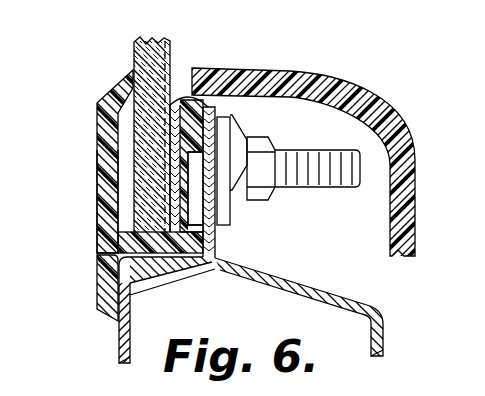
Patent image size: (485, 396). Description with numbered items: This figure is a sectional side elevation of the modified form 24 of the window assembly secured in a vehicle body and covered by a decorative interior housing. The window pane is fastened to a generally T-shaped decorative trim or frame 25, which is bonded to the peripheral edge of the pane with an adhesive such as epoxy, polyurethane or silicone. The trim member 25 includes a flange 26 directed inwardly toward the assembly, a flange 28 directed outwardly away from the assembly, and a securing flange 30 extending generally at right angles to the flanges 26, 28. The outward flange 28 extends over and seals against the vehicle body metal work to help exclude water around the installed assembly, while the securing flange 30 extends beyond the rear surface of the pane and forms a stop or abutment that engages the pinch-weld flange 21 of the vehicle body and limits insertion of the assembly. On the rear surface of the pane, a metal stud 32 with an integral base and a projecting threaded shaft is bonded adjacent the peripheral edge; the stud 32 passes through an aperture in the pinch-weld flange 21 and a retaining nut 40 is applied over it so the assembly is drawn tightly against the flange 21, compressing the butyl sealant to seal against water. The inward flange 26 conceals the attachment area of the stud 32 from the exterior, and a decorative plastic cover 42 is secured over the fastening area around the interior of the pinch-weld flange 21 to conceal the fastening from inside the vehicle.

The pinch-weld flange 21 is at (222, 243).
The modified form of the invention 24 is at (128, 52).
The decorative trim or frame 25 is at (97, 197).
The flange 26 is at (100, 147).
The flange 28 is at (100, 274).
The securing flange 30 is at (177, 240).
The metal stud 32 is at (315, 188).
The retaining nut 40 is at (237, 137).
The decorative cover 42 is at (340, 92).